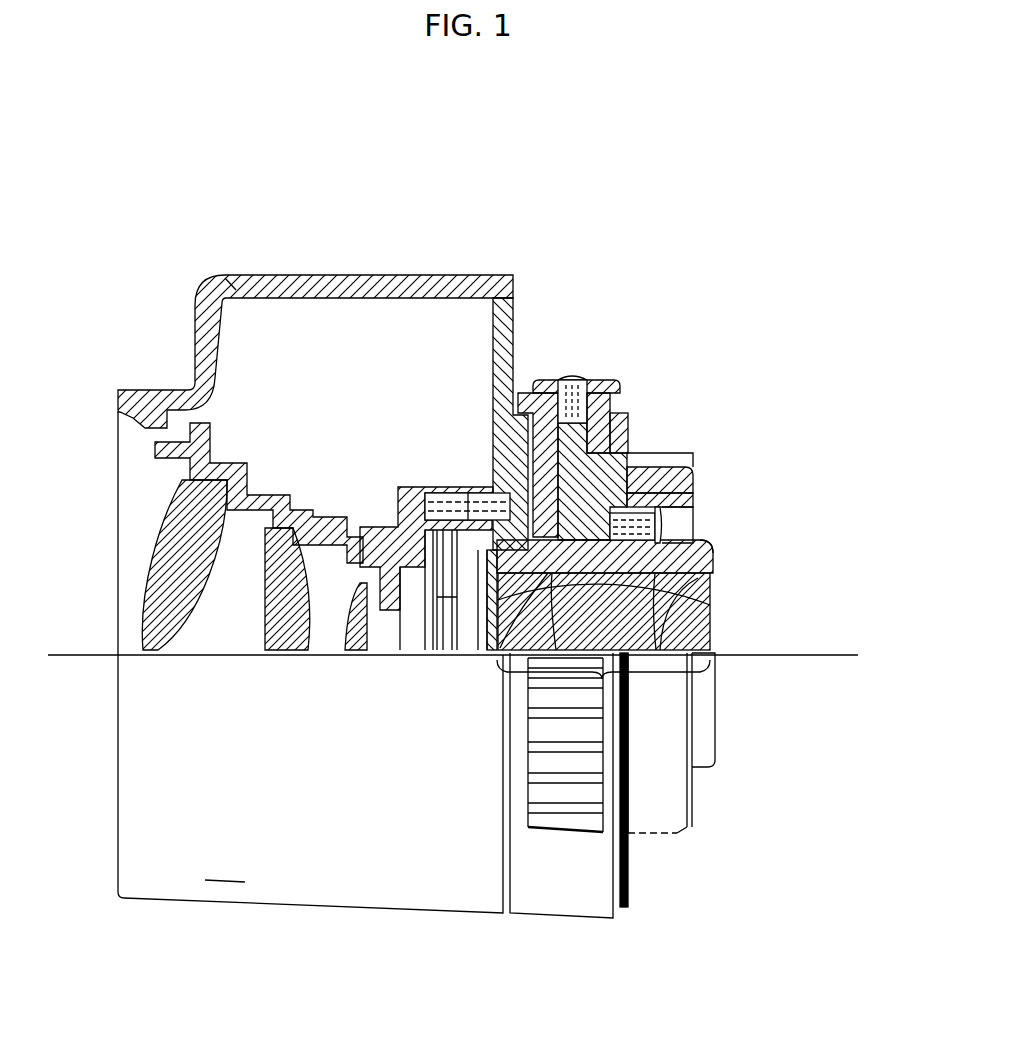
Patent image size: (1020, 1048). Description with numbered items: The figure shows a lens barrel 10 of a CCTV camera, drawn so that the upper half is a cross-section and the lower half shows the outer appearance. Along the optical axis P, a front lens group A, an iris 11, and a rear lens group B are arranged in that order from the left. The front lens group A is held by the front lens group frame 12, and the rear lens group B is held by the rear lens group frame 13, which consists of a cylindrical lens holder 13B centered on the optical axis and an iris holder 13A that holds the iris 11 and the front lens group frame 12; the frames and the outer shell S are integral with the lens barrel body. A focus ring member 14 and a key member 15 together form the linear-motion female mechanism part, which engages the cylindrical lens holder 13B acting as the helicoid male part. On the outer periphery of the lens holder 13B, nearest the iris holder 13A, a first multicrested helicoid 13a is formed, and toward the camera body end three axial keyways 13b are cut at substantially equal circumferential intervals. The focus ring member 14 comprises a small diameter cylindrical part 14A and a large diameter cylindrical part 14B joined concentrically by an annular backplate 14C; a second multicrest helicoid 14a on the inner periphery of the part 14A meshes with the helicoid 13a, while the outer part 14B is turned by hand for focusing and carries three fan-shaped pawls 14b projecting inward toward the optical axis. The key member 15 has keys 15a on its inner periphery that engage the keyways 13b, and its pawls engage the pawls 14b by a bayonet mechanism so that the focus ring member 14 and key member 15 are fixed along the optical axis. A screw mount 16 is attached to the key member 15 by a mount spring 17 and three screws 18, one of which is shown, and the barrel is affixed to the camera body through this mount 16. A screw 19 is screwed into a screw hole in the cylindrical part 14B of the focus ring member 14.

The lens barrel 10 is at (324, 268).
The iris 11 is at (420, 662).
The front lens group frame 12 is at (230, 472).
The rear lens group frame 13 is at (490, 393).
The iris holder 13A is at (497, 480).
The cylindrical lens holder 13B is at (660, 600).
The multicrested helicoid 13a is at (688, 478).
The keyways 13b is at (713, 557).
The focus ring member 14 is at (608, 358).
The small diameter cylindrical part 14A is at (497, 652).
The large diameter cylindrical part 14B is at (547, 390).
The annular backplate 14C is at (522, 440).
The multicrest helicoid 14a is at (443, 660).
The fan-shaped pawls 14b is at (602, 433).
The key member 15 is at (632, 440).
The keys 15a is at (683, 598).
The mount 16 is at (696, 471).
The mount spring 17 is at (695, 502).
The screws 18 is at (663, 522).
The screw 19 is at (617, 393).
The front lens group A is at (368, 658).
The rear lens group B is at (603, 688).
The outer shell S is at (234, 290).
The optical axis P is at (454, 656).